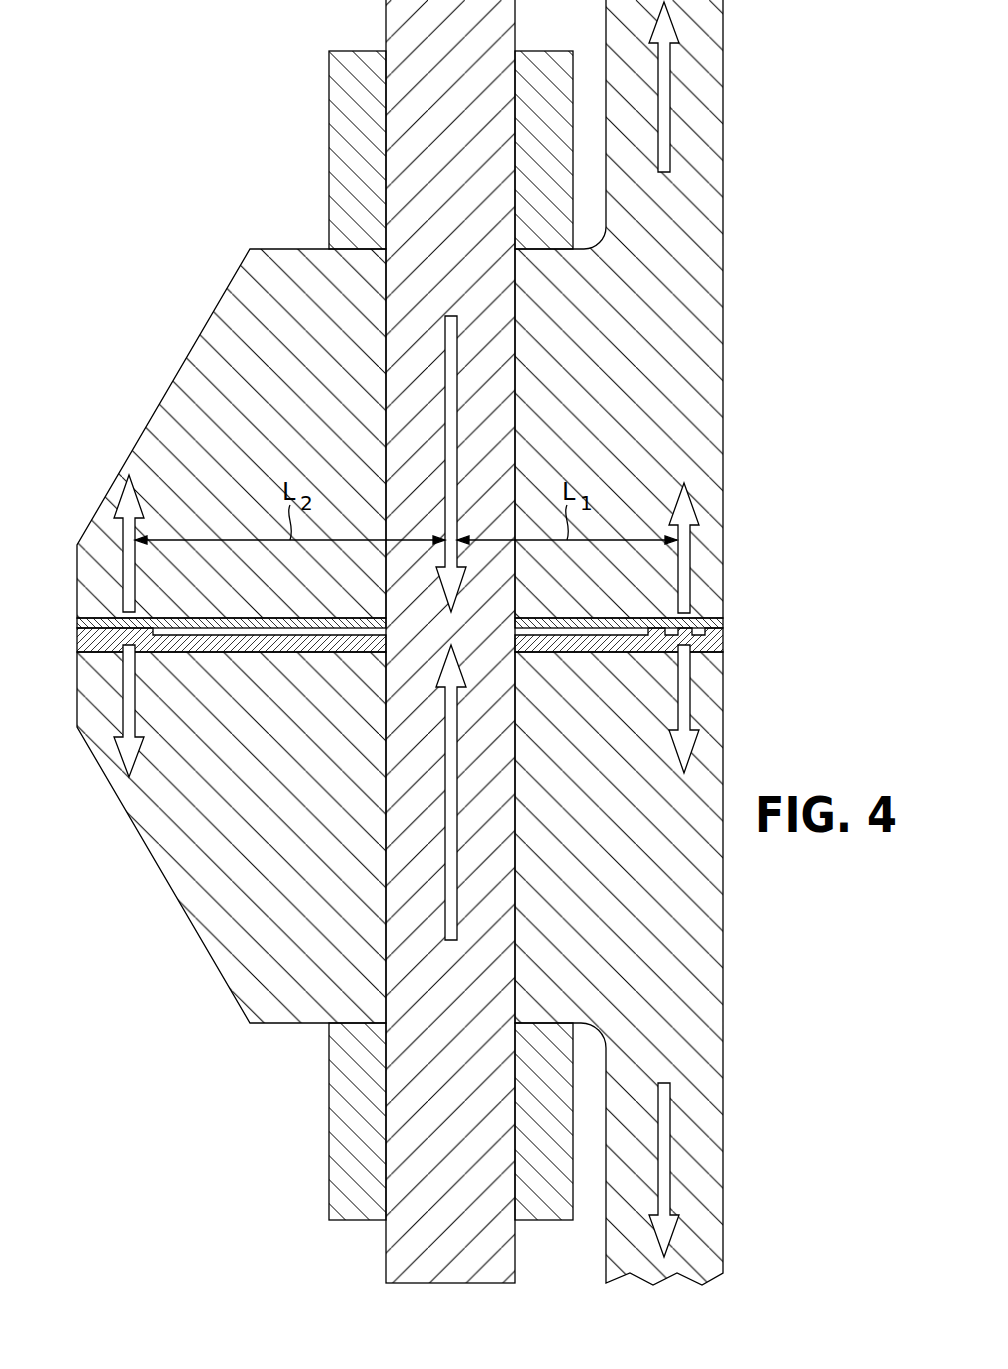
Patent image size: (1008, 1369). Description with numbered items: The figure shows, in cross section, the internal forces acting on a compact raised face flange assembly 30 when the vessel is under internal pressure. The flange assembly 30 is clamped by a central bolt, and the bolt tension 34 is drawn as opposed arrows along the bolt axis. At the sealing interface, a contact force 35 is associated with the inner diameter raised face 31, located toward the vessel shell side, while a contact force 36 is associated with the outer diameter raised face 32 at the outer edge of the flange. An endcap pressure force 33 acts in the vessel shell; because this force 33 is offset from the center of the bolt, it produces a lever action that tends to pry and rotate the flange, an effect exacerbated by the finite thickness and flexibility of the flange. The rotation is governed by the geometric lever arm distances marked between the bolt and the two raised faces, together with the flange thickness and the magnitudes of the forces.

The compact raised face flange assembly 30 is at (188, 68).
The inner diameter raised face 31 is at (713, 625).
The outer diameter raised face 32 is at (108, 625).
The endcap pressure force 33 is at (672, 112).
The bolt tension 34 is at (458, 390).
The contact force 35 is at (692, 563).
The contact force 36 is at (118, 708).